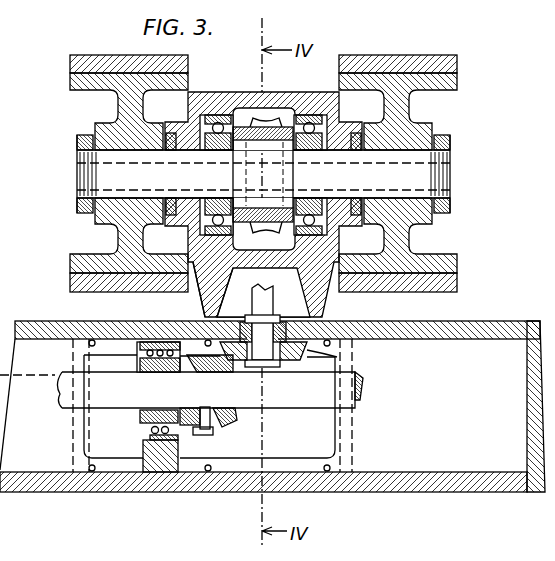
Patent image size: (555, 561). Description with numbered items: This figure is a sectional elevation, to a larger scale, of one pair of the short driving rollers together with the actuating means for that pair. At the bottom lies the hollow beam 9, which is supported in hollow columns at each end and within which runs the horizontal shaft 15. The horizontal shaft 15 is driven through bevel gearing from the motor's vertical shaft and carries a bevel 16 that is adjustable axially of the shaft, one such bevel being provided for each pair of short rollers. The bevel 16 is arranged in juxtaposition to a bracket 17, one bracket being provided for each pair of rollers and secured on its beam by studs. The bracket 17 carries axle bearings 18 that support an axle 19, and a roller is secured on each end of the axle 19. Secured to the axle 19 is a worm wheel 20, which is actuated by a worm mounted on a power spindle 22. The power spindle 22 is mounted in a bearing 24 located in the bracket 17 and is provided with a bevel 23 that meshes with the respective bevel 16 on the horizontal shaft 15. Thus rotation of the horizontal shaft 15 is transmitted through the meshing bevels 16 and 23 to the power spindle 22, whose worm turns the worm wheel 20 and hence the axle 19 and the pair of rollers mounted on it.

The hollow beam 9 is at (457, 470).
The horizontal shaft 15 is at (325, 400).
The bevel 16 is at (237, 420).
The bracket 17 is at (271, 106).
The axle bearing 18 is at (222, 116).
The axle 19 is at (407, 182).
The worm wheel 20 is at (258, 120).
The power spindle 22 is at (222, 303).
The bevel 23 is at (340, 357).
The bearing 24 is at (377, 342).